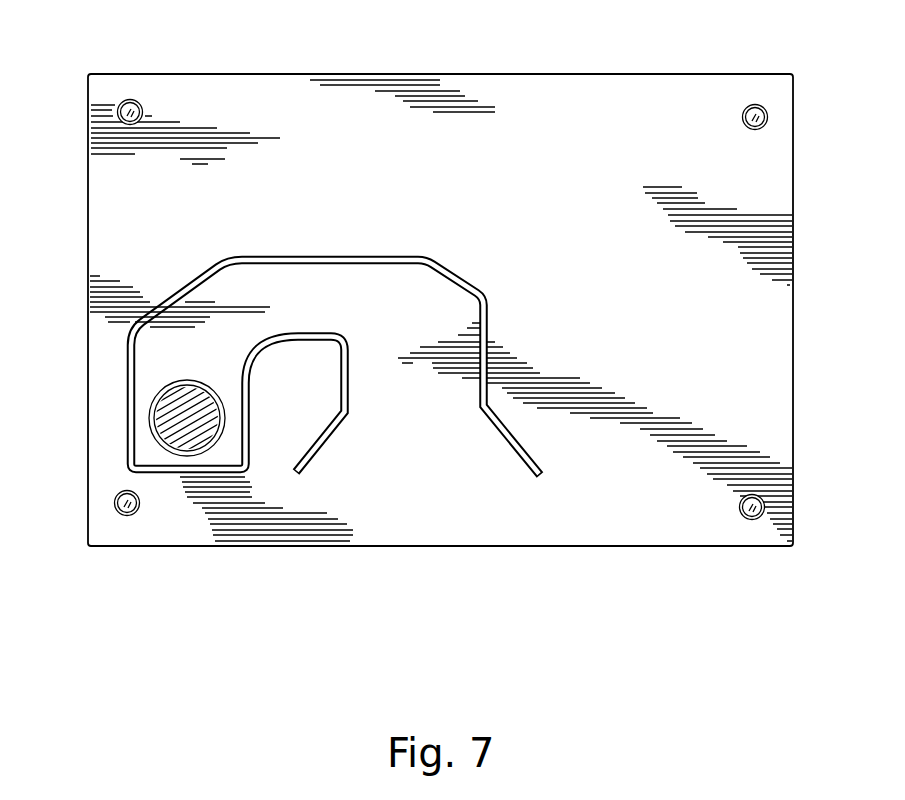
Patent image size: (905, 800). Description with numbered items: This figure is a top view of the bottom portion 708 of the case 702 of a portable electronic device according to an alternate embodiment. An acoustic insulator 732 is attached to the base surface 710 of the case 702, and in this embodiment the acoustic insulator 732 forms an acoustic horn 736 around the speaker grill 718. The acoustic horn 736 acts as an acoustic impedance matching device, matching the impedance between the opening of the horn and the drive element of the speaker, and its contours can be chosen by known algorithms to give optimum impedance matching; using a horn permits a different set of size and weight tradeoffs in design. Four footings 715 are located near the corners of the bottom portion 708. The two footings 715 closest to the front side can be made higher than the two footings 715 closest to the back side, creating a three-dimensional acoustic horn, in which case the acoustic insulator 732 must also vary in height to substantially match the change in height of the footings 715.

The case 702 is at (606, 73).
The bottom portion 708 is at (765, 322).
The base surface 710 is at (620, 490).
The footings 715 is at (118, 108).
The speaker grill 718 is at (175, 403).
The acoustic insulator 732 is at (277, 430).
The acoustic horn 736 is at (418, 453).